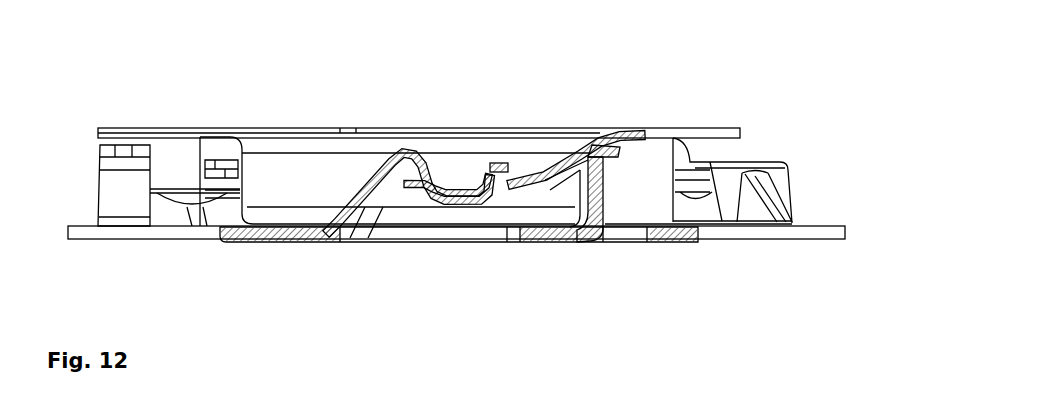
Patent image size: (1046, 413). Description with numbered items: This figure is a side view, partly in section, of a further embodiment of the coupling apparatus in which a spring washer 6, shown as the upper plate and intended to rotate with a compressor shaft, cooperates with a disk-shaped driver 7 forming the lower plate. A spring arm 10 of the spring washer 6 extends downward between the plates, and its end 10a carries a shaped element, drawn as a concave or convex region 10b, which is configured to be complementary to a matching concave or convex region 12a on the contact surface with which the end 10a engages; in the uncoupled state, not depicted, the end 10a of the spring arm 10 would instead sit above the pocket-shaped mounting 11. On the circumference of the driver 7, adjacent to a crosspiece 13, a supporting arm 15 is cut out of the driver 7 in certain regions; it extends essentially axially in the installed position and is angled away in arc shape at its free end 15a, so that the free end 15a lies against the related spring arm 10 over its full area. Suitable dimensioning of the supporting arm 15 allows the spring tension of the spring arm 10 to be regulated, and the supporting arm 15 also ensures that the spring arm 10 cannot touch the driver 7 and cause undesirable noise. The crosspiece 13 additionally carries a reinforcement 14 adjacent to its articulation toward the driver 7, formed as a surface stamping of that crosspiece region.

The spring washer 6 is at (668, 132).
The disk-shaped driver 7 is at (145, 230).
The spring arm 10 is at (552, 163).
The end of the spring arm 10a is at (502, 187).
The concave or convex region 10b is at (448, 206).
The pocket-shaped mounting 11 is at (407, 153).
The concave or convex region 12a is at (458, 180).
The crosspiece 13 is at (791, 188).
The reinforcement 14 is at (772, 208).
The supporting arm 15 is at (605, 203).
The free end of the supporting arm 15a is at (630, 156).